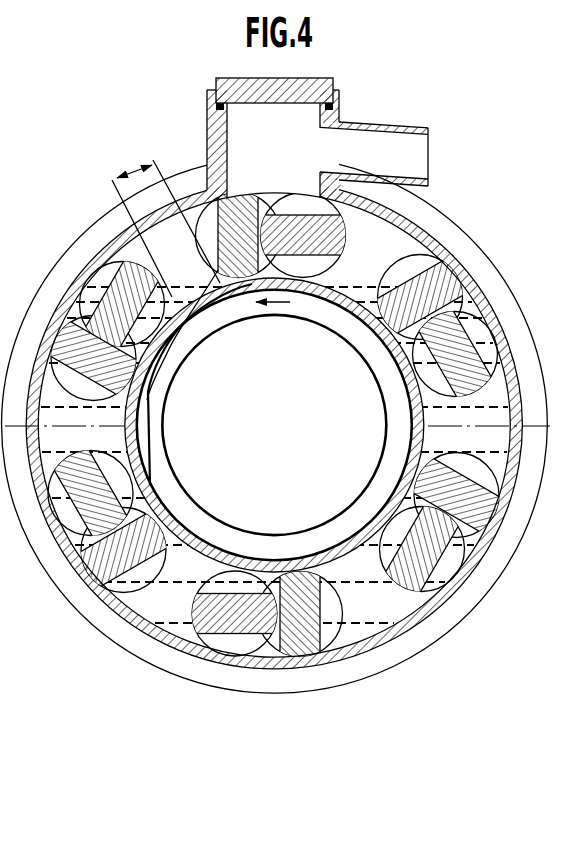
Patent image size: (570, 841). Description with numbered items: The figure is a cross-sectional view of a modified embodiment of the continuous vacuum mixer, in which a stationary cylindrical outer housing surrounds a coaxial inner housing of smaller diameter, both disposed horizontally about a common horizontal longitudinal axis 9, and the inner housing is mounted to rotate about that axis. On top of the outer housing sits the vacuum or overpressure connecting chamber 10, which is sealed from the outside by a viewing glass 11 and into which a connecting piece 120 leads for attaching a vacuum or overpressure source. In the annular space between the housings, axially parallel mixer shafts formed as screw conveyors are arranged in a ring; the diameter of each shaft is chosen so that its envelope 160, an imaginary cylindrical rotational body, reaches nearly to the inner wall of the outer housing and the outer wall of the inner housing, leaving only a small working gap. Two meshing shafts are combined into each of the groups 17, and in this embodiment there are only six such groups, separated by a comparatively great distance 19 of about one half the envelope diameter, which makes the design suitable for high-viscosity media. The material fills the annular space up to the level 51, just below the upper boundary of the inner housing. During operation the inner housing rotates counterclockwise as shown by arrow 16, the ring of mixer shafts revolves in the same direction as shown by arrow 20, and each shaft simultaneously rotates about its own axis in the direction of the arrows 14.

The longitudinal axis 9 is at (13, 426).
The vacuum or overpressure connecting chamber 10 is at (338, 109).
The viewing glass 11 is at (327, 78).
The connecting piece 120 is at (402, 147).
The arrows 14 is at (205, 222).
The envelope 160 is at (456, 232).
The distance 19 is at (166, 211).
The level 51 is at (190, 248).
The arrow 20 is at (212, 272).
The groups 17 is at (177, 367).
The arrow 16 is at (278, 306).